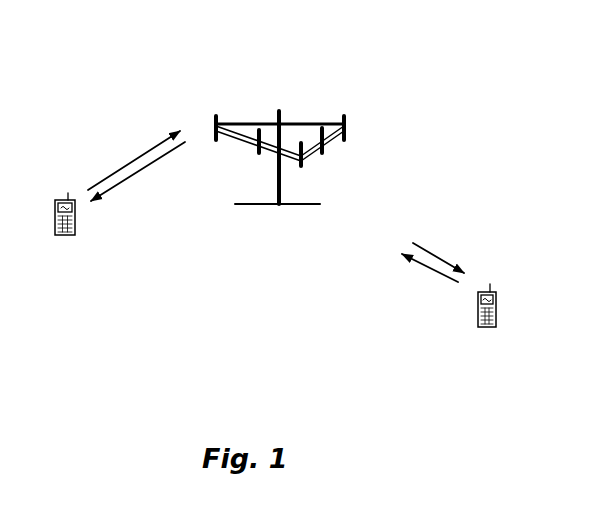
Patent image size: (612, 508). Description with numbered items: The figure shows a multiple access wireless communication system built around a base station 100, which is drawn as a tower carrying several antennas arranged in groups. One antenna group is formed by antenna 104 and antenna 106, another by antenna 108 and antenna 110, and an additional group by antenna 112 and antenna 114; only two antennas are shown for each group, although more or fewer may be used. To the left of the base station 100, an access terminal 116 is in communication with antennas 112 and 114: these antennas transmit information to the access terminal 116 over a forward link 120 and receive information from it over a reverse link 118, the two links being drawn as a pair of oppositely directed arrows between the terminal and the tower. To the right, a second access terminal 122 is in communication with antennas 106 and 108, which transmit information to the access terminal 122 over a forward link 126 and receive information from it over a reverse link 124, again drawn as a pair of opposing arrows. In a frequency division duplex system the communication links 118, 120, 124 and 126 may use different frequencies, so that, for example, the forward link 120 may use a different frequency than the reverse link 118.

The base station 100 is at (267, 204).
The antenna 104 is at (303, 166).
The antenna 106 is at (323, 153).
The antenna 108 is at (346, 138).
The antenna 110 is at (281, 114).
The antenna 112 is at (218, 121).
The antenna 114 is at (259, 158).
The access terminal 116 is at (64, 197).
The reverse link 118 is at (134, 164).
The forward link 120 is at (143, 168).
The access terminal 122 is at (489, 285).
The reverse link 124 is at (425, 265).
The forward link 126 is at (441, 258).